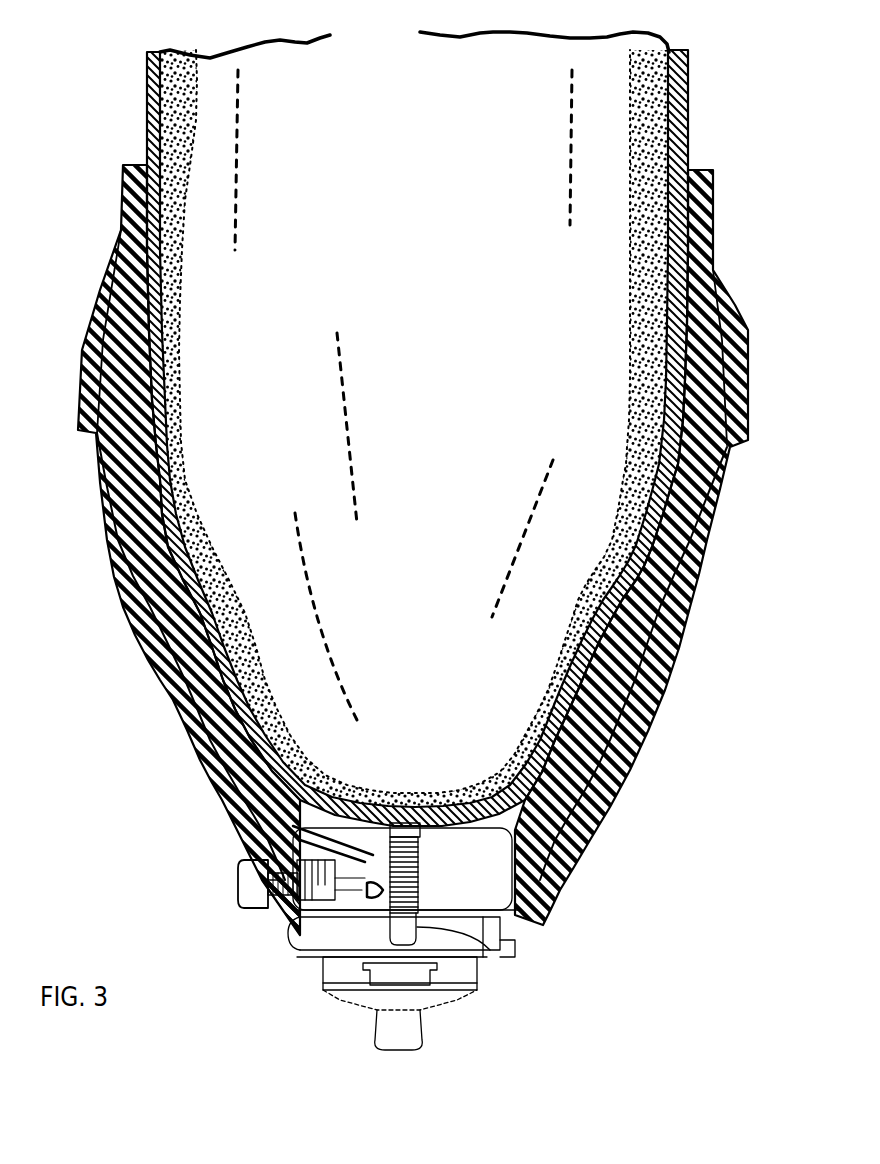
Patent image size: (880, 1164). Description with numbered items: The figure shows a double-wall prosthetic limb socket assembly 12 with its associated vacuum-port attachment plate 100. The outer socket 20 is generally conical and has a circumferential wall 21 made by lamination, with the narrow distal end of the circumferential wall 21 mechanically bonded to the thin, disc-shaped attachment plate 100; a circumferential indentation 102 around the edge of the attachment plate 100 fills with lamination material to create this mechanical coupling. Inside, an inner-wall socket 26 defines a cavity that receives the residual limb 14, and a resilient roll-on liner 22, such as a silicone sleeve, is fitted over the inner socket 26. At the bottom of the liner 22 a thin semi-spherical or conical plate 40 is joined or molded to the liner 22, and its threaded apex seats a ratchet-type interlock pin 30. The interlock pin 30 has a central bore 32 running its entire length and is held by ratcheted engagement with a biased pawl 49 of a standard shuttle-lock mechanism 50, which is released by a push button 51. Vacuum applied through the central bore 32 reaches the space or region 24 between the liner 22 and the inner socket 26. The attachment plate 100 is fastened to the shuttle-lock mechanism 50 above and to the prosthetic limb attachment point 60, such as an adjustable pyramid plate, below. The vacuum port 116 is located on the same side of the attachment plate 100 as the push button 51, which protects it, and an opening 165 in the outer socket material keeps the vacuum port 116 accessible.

The prosthetic socket system 12 is at (766, 596).
The residual limb 14 is at (590, 77).
The outer socket 20 is at (598, 810).
The circumferential wall 21 is at (135, 568).
The resilient roll-on liner 22 is at (540, 805).
The space or region 24 is at (668, 608).
The inner-wall socket 26 is at (660, 458).
The interlock pin 30 is at (472, 968).
The central bore 32 is at (492, 935).
The plate 40 is at (423, 820).
The biased pawl 49 is at (335, 840).
The shuttle-lock mechanism 50 is at (465, 870).
The push button 51 is at (237, 872).
The prosthetic limb attachment point 60 is at (403, 1022).
The attachment plate 100 is at (312, 945).
The circumferential indentation 102 is at (508, 933).
The vacuum port 116 is at (297, 947).
The opening 165 is at (272, 941).